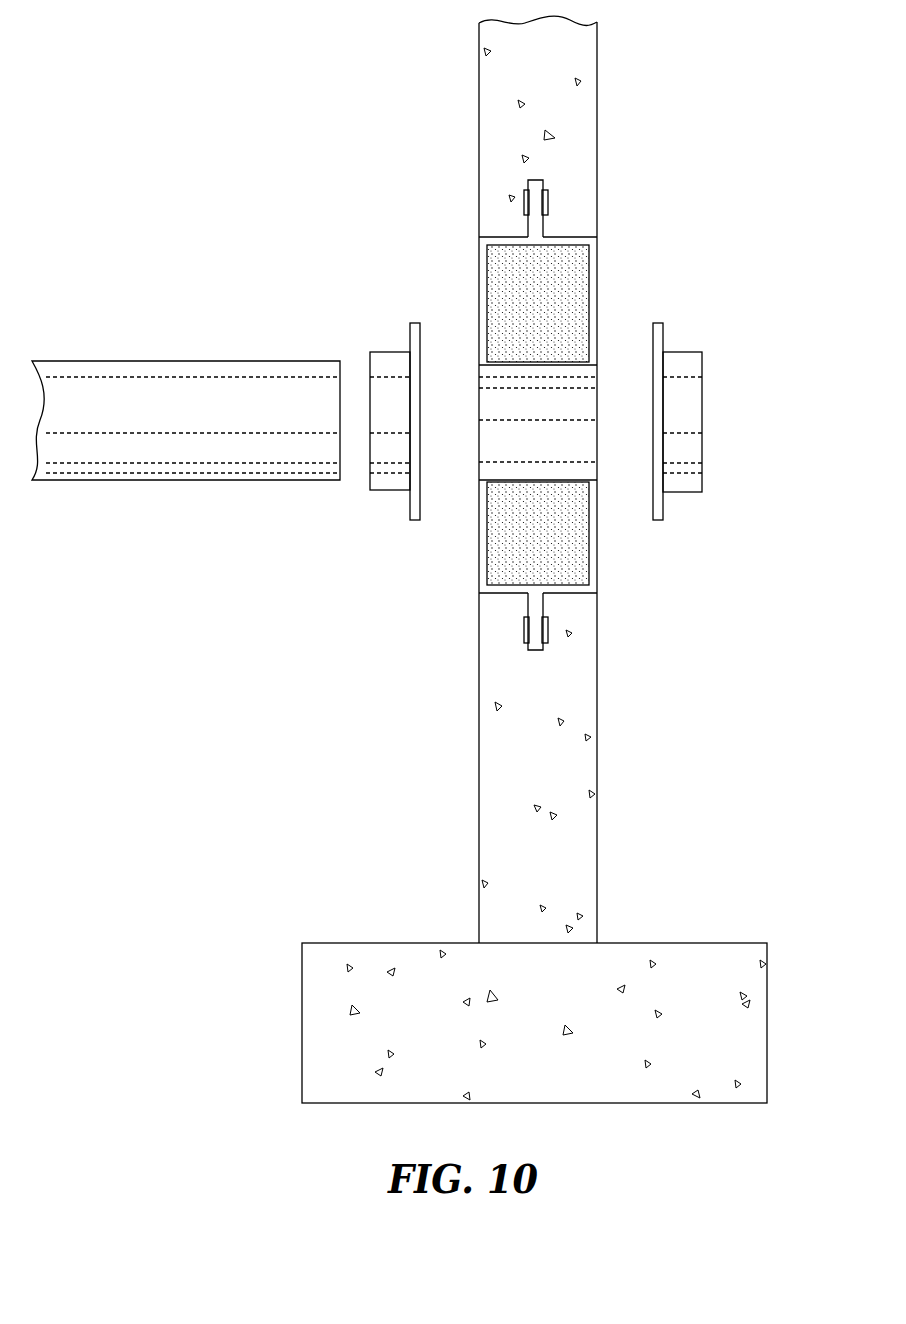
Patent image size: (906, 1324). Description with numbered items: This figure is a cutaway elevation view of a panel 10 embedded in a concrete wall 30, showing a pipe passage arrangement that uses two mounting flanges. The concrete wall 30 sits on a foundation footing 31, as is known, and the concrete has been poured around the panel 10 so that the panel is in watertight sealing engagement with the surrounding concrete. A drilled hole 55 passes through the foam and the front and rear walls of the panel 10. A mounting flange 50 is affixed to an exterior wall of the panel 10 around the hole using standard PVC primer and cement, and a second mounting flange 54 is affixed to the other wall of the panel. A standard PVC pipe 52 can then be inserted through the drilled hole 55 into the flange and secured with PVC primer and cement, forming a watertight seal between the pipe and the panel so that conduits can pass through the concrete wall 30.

The panel 10 is at (479, 540).
The concrete wall 30 is at (598, 800).
The foundation footing 31 is at (686, 942).
The mounting flange 50 is at (703, 394).
The PVC pipe 52 is at (214, 360).
The second mounting flange 54 is at (385, 352).
The drilled hole 55 is at (524, 453).